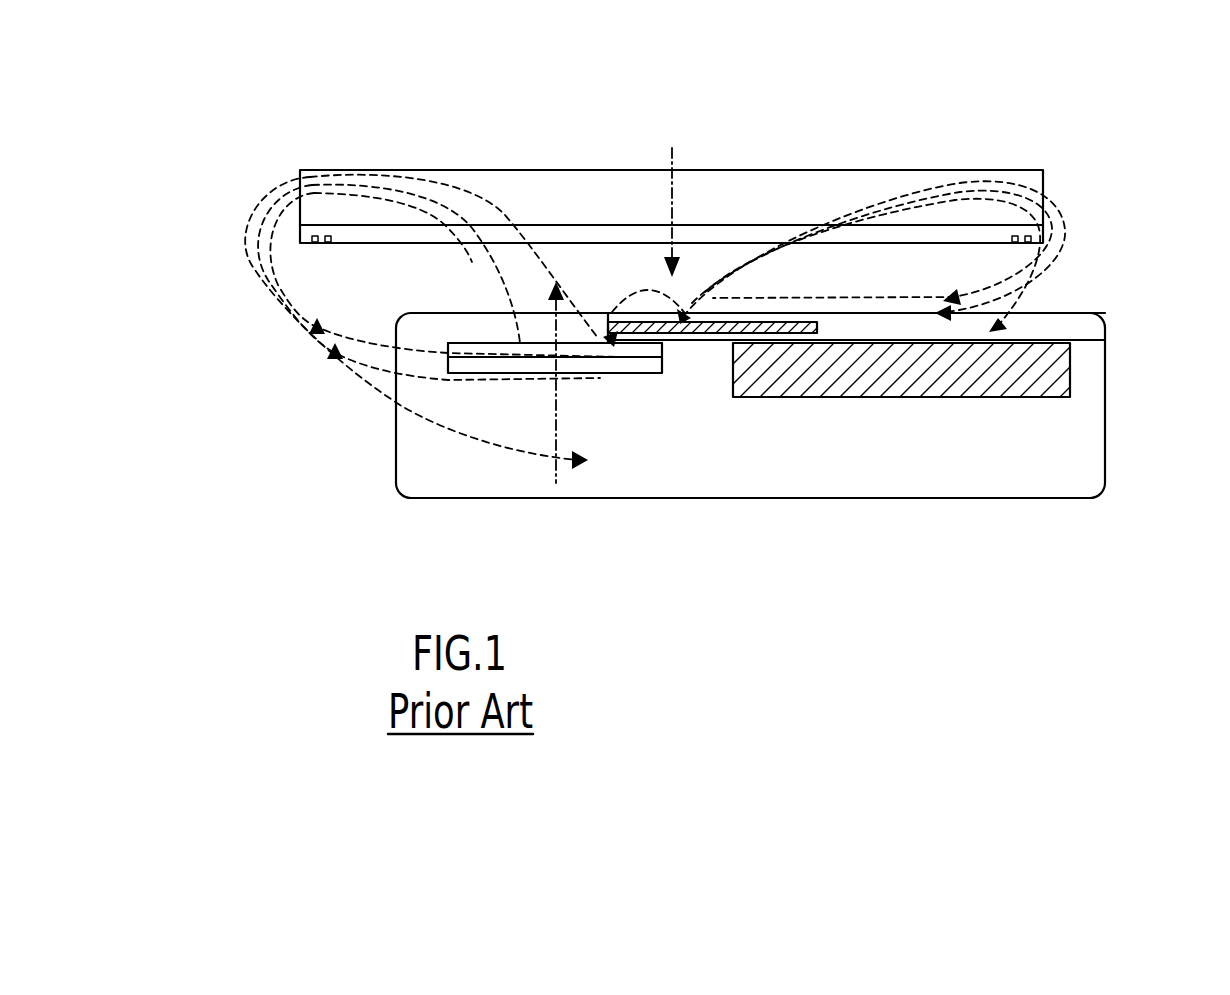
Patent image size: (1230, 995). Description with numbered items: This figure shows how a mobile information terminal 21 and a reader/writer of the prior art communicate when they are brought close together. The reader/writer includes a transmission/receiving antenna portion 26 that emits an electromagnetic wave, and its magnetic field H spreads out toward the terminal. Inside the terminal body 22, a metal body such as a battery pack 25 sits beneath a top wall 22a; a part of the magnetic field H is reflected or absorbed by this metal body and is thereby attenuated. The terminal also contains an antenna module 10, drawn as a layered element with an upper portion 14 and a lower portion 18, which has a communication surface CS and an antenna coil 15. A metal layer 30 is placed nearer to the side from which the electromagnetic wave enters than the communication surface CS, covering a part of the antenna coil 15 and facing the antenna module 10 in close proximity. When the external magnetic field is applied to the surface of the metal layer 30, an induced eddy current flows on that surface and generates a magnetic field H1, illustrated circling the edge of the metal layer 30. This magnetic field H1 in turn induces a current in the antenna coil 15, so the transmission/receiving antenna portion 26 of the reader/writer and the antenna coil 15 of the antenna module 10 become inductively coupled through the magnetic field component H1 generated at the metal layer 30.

The antenna module 10 is at (552, 353).
The magnetic sensing element 14 is at (630, 373).
The antenna coil 15 is at (457, 345).
The substrate 18 is at (608, 373).
The mobile information terminal 21 is at (384, 488).
The terminal body 22 is at (960, 498).
The housing top wall 22a is at (1085, 312).
The battery pack 25 is at (1060, 367).
The transmission/receiving antenna portion 26 is at (1014, 242).
The metal layer 30 is at (645, 322).
The communication surface CS is at (535, 343).
The magnetic field H is at (258, 263).
The magnetic field H1 is at (684, 340).